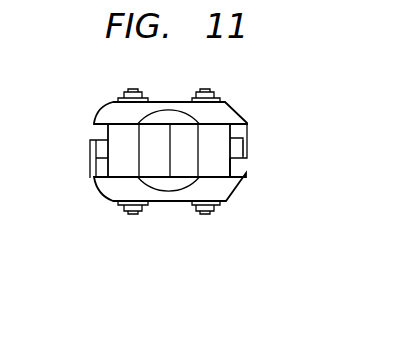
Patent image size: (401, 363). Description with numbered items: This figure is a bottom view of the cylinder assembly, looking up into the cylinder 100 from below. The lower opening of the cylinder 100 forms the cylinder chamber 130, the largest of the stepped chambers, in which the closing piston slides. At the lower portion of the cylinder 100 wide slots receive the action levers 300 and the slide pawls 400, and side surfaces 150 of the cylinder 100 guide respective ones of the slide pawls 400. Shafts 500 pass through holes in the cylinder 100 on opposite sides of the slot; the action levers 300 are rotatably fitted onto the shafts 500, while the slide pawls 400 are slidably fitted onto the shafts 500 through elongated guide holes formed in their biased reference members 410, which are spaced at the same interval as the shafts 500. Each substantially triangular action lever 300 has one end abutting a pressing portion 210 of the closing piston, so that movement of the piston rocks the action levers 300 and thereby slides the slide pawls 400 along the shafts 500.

The cylinder 100 is at (102, 197).
The cylinder chamber 130 is at (176, 192).
The side surfaces 150 is at (218, 121).
The pressing portions 210 is at (247, 145).
The action levers 300 is at (236, 160).
The slide pawls 400 is at (219, 168).
The biased reference members 410 is at (97, 165).
The shafts 500 is at (135, 215).